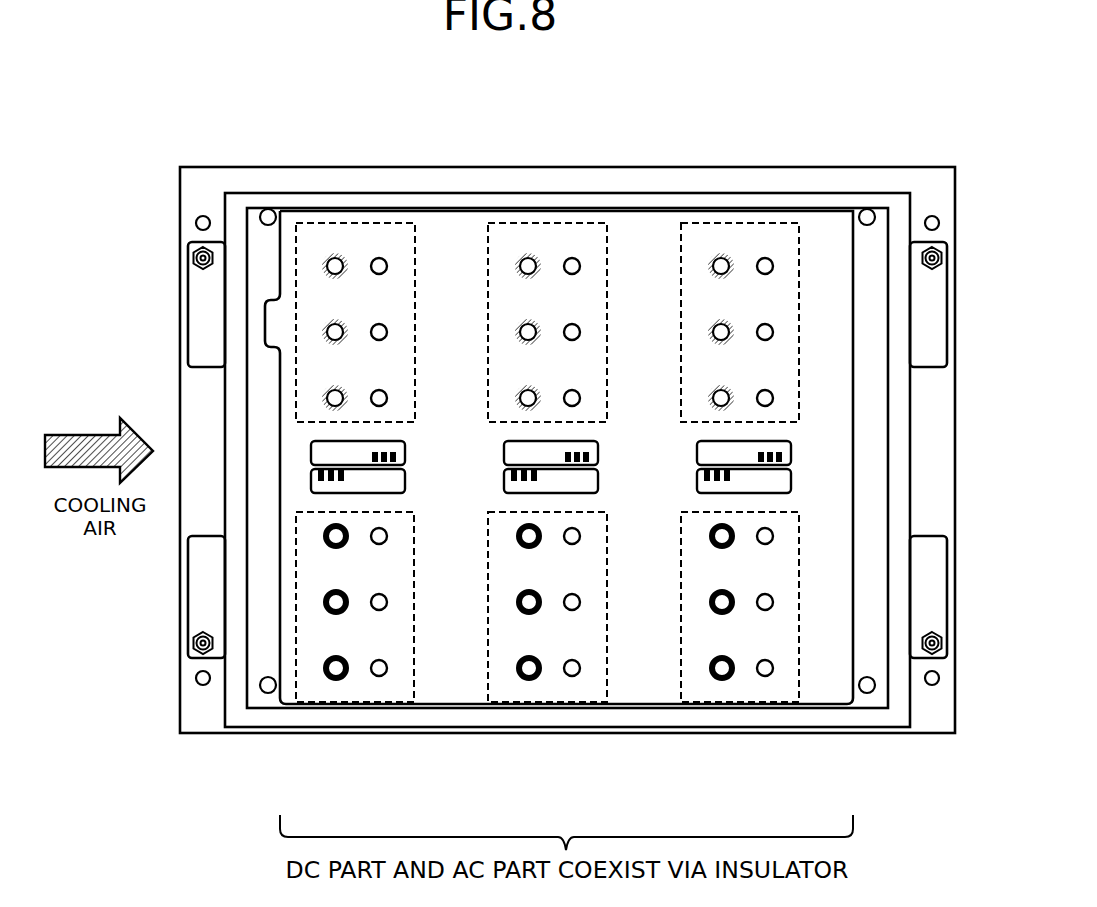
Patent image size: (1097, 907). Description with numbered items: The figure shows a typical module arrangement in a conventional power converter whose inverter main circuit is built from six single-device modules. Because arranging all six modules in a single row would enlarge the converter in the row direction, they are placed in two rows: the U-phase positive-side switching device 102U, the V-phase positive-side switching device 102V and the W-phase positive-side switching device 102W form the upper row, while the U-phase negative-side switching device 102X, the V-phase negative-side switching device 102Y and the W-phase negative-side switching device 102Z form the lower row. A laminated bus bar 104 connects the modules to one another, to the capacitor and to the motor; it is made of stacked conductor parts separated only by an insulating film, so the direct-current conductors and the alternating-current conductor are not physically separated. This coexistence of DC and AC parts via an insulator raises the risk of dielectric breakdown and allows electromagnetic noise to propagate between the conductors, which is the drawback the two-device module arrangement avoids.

The U-phase positive-side switching device 102U is at (321, 222).
The V-phase positive-side switching device 102V is at (520, 222).
The W-phase positive-side switching device 102W is at (713, 222).
The U-phase negative-side switching device 102X is at (342, 703).
The V-phase negative-side switching device 102Y is at (543, 703).
The W-phase negative-side switching device 102Z is at (740, 703).
The bus bar 104 is at (448, 663).